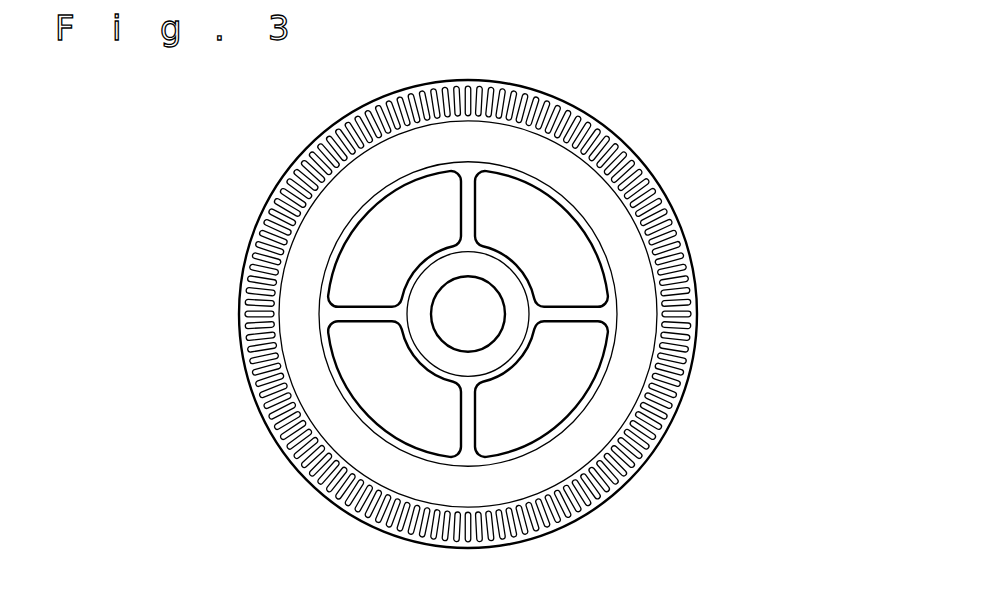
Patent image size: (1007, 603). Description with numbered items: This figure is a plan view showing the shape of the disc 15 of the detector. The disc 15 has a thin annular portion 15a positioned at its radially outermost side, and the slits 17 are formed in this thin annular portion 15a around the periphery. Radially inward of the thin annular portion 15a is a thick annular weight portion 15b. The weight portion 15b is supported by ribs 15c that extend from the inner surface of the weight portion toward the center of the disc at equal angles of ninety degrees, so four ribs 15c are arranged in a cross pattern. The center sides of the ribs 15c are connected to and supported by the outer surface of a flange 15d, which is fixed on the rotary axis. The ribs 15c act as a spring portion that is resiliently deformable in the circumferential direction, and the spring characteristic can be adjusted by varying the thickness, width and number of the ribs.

The disc 15 is at (650, 138).
The thin annular portion 15a is at (667, 203).
The thick annular weight portion 15b is at (640, 255).
The ribs 15c is at (457, 198).
The flange 15d is at (505, 347).
The slits 17 is at (553, 100).